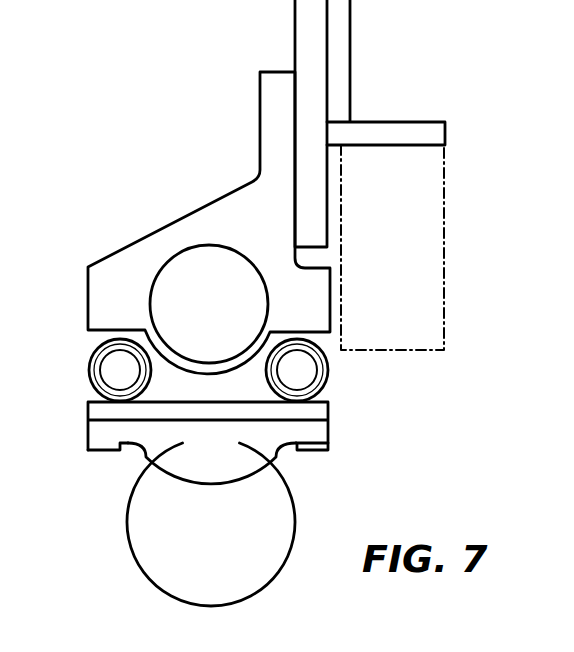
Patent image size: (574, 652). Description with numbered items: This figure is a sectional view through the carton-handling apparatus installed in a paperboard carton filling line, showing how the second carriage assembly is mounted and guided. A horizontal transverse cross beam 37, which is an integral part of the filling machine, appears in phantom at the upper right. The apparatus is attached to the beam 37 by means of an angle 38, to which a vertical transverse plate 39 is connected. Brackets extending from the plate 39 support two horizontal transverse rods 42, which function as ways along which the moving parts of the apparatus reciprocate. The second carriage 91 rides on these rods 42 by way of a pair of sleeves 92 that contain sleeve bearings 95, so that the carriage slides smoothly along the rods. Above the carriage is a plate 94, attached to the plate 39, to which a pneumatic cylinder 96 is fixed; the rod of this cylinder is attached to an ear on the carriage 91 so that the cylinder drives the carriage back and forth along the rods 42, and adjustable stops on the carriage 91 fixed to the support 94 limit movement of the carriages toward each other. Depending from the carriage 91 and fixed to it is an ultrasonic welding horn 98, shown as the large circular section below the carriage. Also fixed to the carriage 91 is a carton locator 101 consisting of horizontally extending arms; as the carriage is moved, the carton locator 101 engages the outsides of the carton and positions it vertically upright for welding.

The horizontal transverse cross beam 37 is at (445, 233).
The angle 38 is at (343, 44).
The vertical transverse plate 39 is at (297, 28).
The horizontal transverse rod 42 is at (110, 376).
The second carriage 91 is at (216, 405).
The sleeve 92 is at (96, 366).
The plate 94 is at (148, 238).
The sleeve bearing 95 is at (98, 348).
The pneumatic cylinder 96 is at (225, 314).
The ultrasonic welding horn 98 is at (223, 528).
The carton locator 101 is at (108, 452).